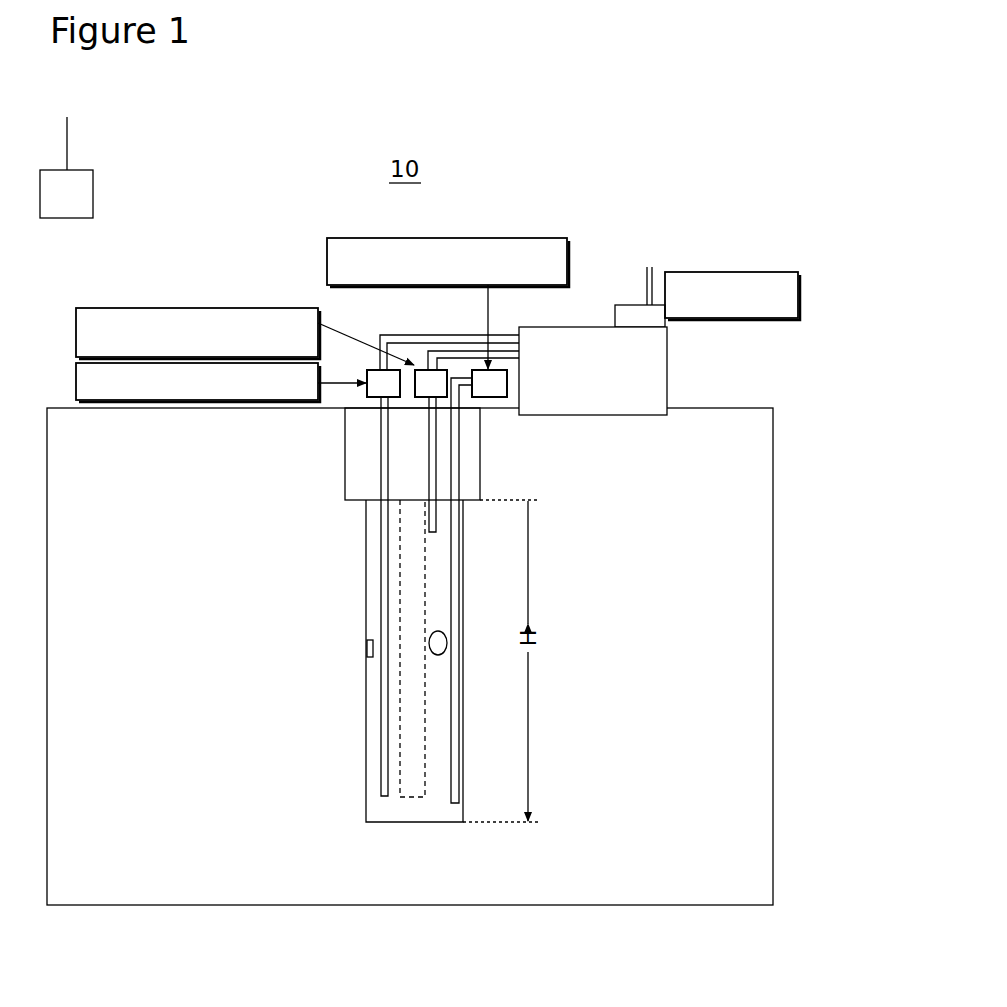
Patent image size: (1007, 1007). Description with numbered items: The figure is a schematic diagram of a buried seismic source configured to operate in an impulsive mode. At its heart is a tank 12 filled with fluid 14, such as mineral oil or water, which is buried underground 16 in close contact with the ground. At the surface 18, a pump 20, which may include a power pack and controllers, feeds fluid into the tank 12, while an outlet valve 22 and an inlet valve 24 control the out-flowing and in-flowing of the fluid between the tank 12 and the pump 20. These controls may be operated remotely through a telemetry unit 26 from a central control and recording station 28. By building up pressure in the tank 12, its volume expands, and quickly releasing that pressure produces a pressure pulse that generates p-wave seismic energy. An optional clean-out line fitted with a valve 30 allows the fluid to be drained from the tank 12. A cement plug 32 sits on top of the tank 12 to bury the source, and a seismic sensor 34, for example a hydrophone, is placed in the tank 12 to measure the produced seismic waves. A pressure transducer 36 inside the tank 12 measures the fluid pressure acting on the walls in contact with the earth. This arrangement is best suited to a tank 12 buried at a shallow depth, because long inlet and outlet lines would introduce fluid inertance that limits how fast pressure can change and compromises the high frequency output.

The tank 12 is at (366, 608).
The fluid 14 is at (442, 555).
The underground 16 is at (213, 782).
The surface 18 is at (752, 408).
The pump 20 is at (667, 373).
The valve 22 is at (207, 308).
The valve 24 is at (76, 380).
The telemetry unit 26 is at (723, 272).
The central control and recording station 28 is at (82, 197).
The valve 30 is at (508, 238).
The cement plug 32 is at (412, 467).
The seismic sensor 34 is at (445, 628).
The pressure transducer 36 is at (367, 650).